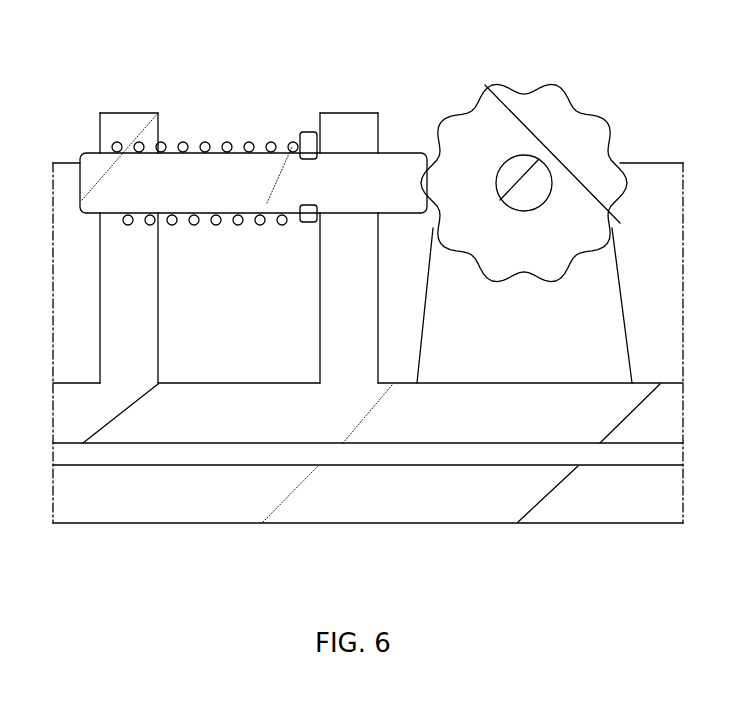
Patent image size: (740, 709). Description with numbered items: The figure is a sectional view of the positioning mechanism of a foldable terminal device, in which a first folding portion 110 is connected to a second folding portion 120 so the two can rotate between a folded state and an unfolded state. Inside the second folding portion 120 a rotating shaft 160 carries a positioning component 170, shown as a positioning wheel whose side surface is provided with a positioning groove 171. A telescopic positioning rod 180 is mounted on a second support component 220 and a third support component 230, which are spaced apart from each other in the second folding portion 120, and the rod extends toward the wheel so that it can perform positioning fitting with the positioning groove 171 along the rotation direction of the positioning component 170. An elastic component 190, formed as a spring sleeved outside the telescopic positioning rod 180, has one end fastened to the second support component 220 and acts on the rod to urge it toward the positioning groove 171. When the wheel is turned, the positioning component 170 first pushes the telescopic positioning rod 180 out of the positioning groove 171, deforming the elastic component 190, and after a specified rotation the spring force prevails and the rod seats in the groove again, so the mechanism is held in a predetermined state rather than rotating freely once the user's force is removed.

The first folding portion 110 is at (315, 492).
The second folding portion 120 is at (392, 420).
The rotating shaft 160 is at (517, 175).
The positioning component 170 is at (472, 125).
The positioning groove 171 is at (452, 125).
The telescopic positioning rod 180 is at (292, 183).
The elastic component 190 is at (222, 147).
The second support component 220 is at (130, 125).
The third support component 230 is at (347, 127).